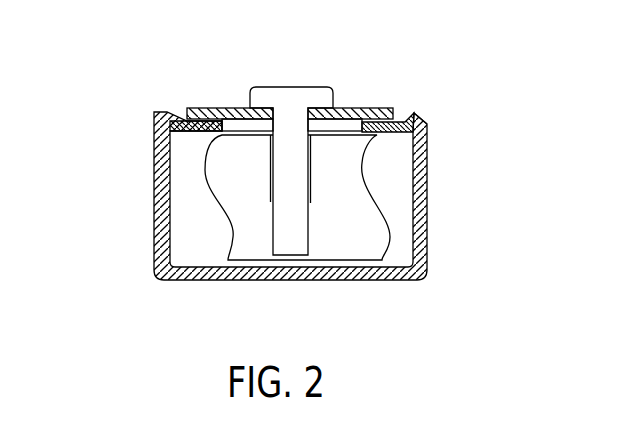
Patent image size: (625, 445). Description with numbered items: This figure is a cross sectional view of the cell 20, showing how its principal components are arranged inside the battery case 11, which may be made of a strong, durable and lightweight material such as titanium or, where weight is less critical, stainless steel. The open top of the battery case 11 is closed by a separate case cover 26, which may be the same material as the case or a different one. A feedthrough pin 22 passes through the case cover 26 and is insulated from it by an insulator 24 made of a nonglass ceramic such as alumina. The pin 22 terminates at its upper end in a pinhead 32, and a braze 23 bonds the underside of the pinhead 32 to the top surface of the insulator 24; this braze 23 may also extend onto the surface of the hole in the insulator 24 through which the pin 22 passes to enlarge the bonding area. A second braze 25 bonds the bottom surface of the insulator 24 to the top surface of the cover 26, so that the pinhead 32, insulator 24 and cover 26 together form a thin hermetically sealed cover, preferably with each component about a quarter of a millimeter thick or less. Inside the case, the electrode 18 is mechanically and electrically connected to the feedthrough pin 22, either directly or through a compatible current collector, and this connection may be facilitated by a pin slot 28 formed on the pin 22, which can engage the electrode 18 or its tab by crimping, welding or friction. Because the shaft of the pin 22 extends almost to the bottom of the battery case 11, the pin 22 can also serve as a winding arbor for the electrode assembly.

The battery assembly 20 is at (178, 70).
The battery case 11 is at (425, 213).
The pinhead 32 is at (291, 87).
The braze 23 is at (337, 108).
The insulator 24 is at (370, 108).
The braze 25 is at (407, 111).
The case cover 26 is at (418, 112).
The feedthrough pin 22 is at (272, 190).
The pin slot 28 is at (308, 215).
The electrode 18 is at (327, 255).